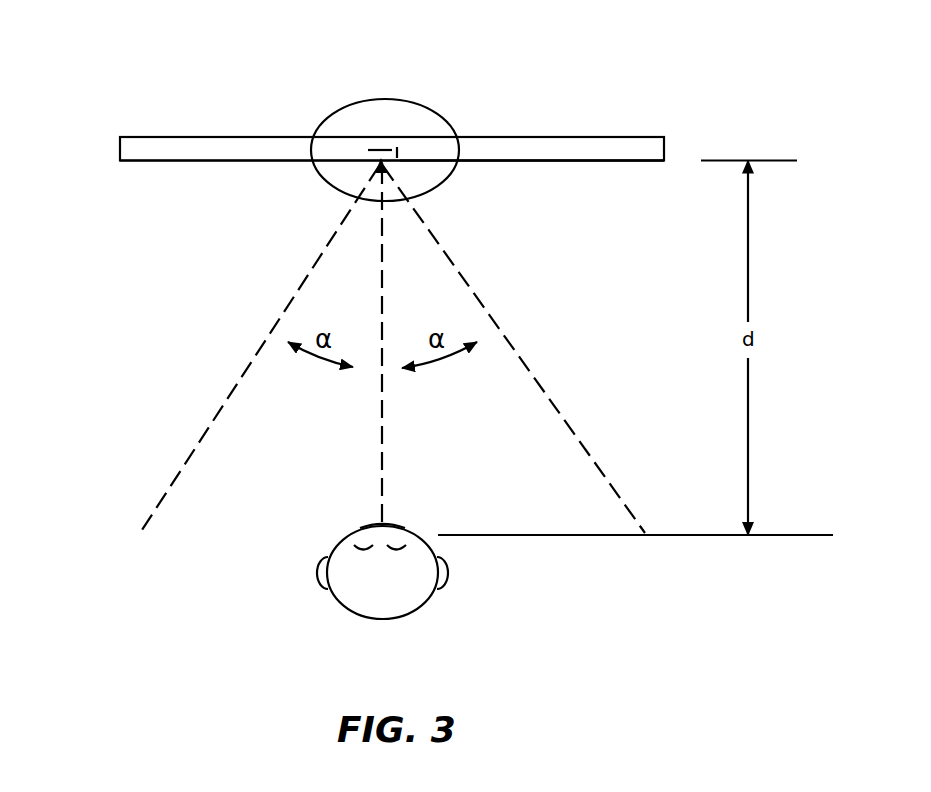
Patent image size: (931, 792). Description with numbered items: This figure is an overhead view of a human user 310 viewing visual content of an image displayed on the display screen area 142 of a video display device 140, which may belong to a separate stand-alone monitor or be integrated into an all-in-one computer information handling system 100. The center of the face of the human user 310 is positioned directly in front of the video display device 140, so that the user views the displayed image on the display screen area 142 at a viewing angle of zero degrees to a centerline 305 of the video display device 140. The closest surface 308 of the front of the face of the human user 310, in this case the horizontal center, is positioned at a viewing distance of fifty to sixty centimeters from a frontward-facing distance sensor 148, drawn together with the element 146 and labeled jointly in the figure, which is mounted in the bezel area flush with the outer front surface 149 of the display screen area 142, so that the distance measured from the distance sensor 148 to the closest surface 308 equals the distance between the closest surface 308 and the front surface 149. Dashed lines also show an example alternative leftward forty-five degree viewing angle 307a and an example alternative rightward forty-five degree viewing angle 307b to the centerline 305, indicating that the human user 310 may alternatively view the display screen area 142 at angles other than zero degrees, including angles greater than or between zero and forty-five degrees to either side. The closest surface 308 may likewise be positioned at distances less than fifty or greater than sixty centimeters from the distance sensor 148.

The all-in-one computer information handling system 100 is at (415, 123).
The video display device 140 is at (120, 152).
The display screen area 142 is at (233, 162).
The sensor 146 is at (314, 115).
The distance sensor 148 is at (382, 148).
The front surface of the display screen area 149 is at (511, 161).
The centerline 305 is at (381, 452).
The leftward viewing angle 307a is at (233, 393).
The rightward viewing angle 307b is at (555, 408).
The closest surface of the front of the face 308 is at (382, 523).
The human user 310 is at (358, 617).